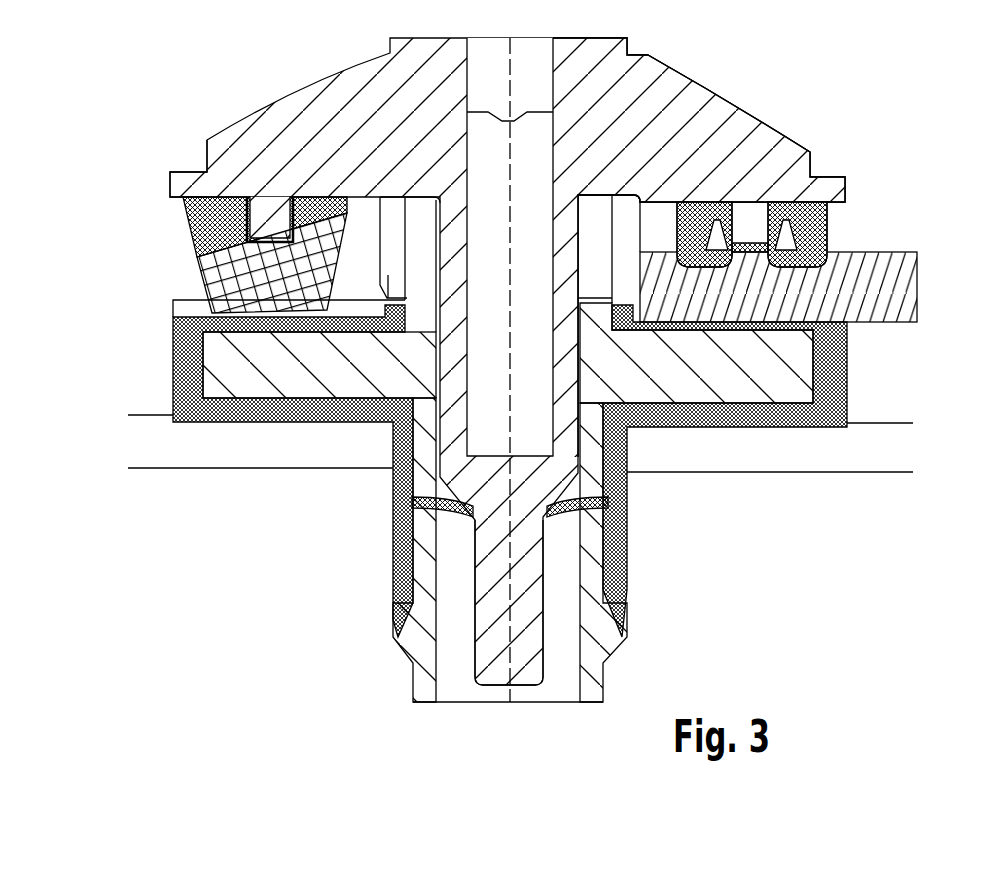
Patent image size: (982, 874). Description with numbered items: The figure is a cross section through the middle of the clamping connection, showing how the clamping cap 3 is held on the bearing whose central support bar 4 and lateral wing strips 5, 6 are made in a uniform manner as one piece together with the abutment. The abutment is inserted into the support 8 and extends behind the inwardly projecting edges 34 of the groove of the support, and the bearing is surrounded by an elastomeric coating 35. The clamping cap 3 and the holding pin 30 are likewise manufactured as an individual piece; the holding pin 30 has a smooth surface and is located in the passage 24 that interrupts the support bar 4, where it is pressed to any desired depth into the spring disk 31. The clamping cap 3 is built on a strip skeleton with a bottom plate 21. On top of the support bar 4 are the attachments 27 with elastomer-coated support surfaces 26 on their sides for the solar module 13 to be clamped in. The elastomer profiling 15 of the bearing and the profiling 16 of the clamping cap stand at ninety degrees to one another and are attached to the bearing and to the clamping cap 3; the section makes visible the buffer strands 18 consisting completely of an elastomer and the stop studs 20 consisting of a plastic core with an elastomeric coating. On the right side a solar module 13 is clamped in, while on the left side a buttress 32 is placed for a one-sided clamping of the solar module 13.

The clamping cap 3 is at (740, 132).
The central support bar 4 is at (677, 168).
The wing strip 5 is at (303, 383).
The wing strip 6 is at (792, 385).
The support 8 is at (750, 452).
The solar module 13 is at (885, 312).
The profiling of the bearing 15 is at (180, 310).
The profiling of the clamping cap 16 is at (827, 213).
The buffer strand 18 is at (818, 237).
The stop stud 20 is at (260, 218).
The bottom plate 21 is at (177, 185).
The passage 24 is at (453, 667).
The support surface 26 is at (390, 228).
The attachment 27 is at (593, 217).
The holding pin 30 is at (487, 615).
The spring disk 31 is at (395, 515).
The buttress 32 is at (208, 277).
The inwardly projecting edge 34 is at (650, 453).
The elastomeric coating 35 is at (640, 595).